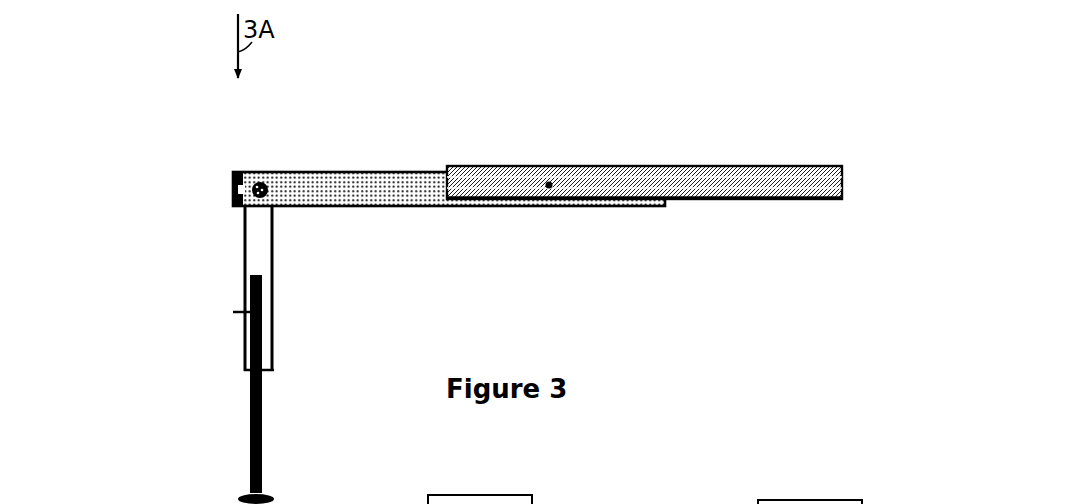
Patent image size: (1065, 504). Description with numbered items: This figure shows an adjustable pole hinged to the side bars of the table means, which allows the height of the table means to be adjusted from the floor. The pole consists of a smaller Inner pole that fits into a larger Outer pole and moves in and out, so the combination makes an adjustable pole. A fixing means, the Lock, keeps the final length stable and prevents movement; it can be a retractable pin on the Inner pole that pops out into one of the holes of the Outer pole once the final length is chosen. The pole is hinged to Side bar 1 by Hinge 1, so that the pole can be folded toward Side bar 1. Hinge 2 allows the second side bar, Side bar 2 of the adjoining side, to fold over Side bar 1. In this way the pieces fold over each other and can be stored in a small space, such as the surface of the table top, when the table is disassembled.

The side bar Side bar 1 is at (441, 208).
The second side bar Side bar 2 is at (644, 136).
The hinge Hinge 1 is at (262, 181).
The hinge Hinge 2 is at (233, 170).
The outer pole Outer pole is at (233, 266).
The inner pole Inner pole is at (246, 446).
The fixing means Lock is at (232, 312).